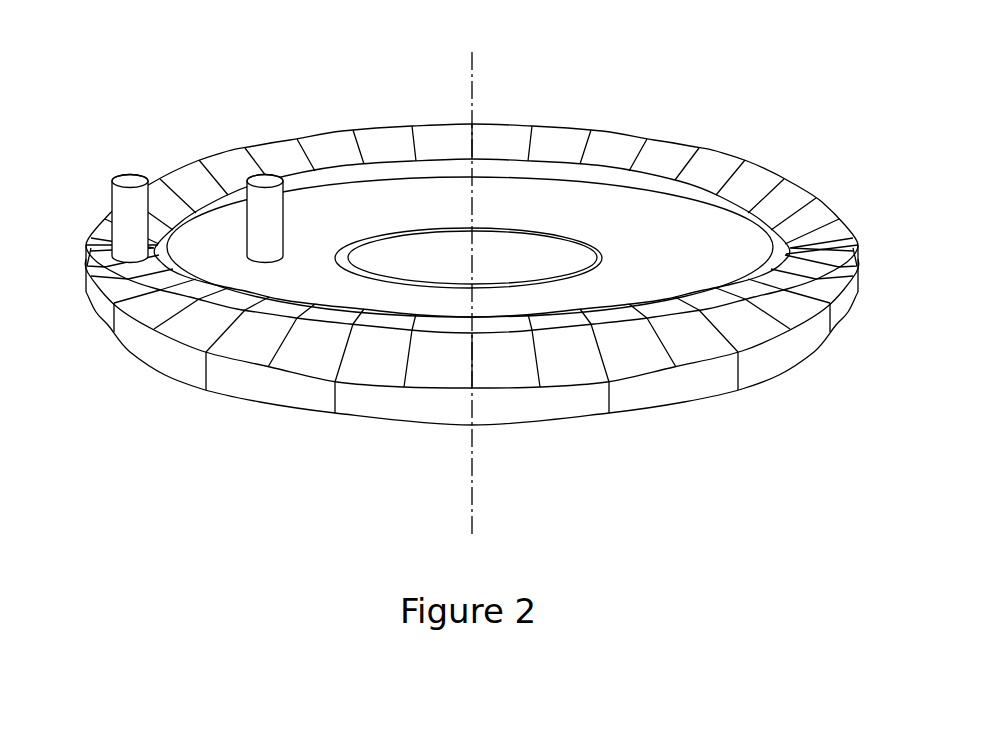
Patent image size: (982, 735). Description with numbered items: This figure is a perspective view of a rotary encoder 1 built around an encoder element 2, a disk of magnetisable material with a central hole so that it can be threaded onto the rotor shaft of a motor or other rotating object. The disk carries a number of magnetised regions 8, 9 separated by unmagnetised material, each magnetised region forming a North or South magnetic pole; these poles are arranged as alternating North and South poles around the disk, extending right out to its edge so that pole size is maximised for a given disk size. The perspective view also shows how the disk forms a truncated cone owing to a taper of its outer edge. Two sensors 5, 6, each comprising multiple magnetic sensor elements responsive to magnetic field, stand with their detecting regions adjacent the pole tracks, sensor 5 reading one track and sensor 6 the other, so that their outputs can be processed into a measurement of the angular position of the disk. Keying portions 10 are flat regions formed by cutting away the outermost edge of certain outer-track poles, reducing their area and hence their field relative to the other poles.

The rotary encoder 1 is at (459, 267).
The encoder element 2 is at (563, 423).
The sensor 5 is at (128, 182).
The sensor 6 is at (265, 178).
The magnetised region 8 is at (243, 362).
The magnetised region 9 is at (307, 370).
The keying portion 10 is at (217, 163).